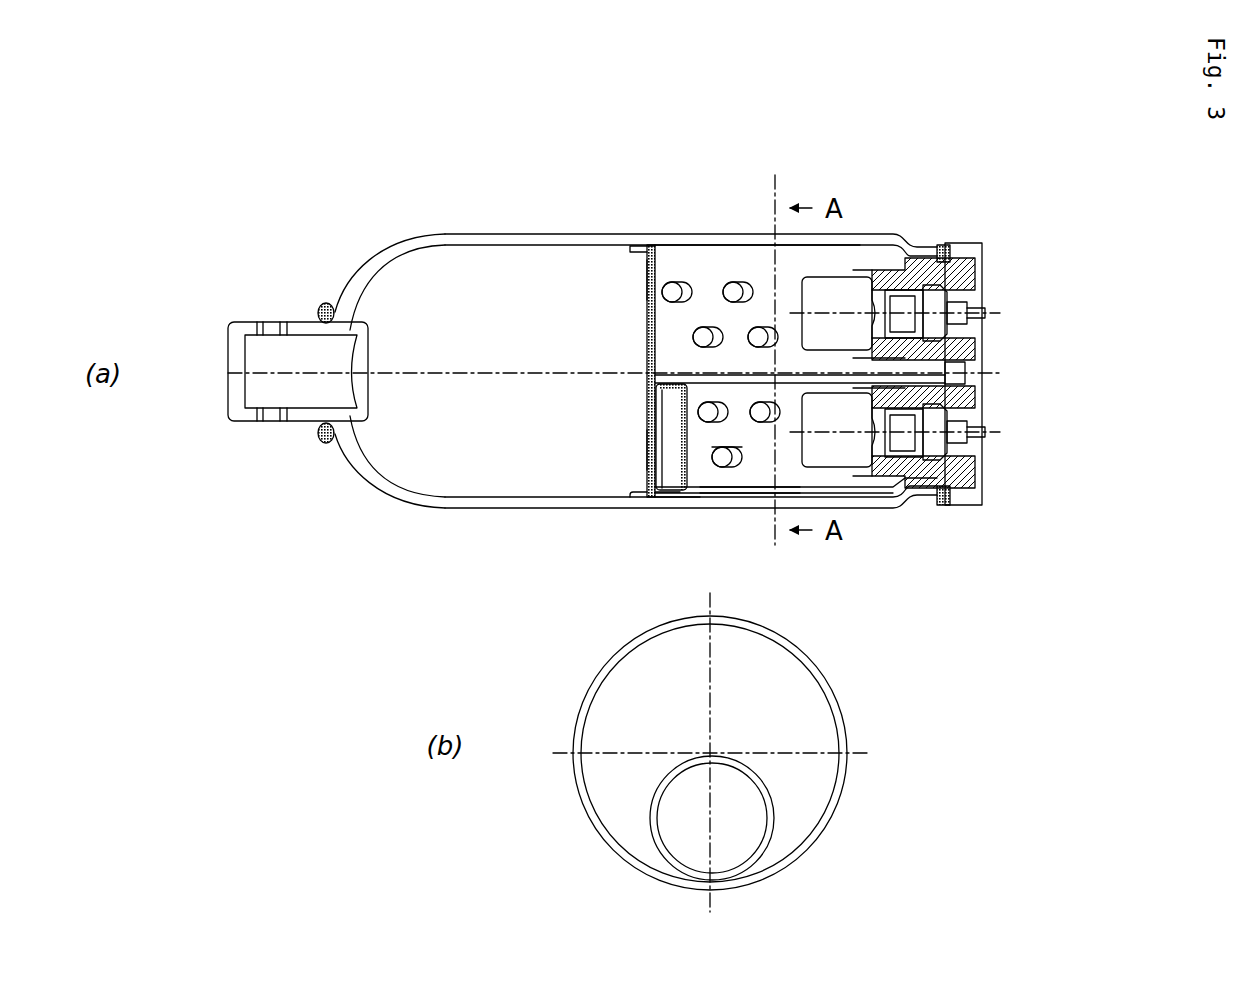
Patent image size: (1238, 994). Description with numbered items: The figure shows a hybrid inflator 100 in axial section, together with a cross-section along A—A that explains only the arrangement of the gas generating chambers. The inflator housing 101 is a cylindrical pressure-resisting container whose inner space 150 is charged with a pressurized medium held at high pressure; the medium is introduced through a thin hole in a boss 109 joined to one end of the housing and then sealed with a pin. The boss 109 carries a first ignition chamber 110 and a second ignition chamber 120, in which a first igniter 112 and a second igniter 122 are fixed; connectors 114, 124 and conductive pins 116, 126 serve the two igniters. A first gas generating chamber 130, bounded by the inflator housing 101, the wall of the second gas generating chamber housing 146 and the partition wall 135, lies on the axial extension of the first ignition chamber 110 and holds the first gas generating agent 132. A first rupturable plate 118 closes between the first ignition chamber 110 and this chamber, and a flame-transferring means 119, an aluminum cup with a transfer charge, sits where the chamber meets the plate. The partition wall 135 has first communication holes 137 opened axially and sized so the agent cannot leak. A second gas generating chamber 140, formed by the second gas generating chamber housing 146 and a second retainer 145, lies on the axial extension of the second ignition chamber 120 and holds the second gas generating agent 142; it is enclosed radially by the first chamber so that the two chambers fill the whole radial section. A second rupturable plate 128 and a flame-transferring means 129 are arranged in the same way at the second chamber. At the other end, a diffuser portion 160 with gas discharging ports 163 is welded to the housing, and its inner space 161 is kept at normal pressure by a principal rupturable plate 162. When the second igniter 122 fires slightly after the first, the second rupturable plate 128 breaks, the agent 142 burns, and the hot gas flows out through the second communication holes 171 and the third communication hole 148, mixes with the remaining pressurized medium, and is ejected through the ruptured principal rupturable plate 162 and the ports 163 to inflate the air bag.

The hybrid inflator 100 is at (546, 205).
The inflator housing 101 is at (441, 234).
The boss 109 is at (924, 258).
The first ignition chamber 110 is at (1000, 305).
The first igniter 112 is at (947, 268).
The connector 114 is at (985, 290).
The conductive pin 116 is at (985, 318).
The first rupturable plate 118 is at (903, 300).
The flame-transferring means 119 is at (835, 295).
The second ignition chamber 120 is at (1000, 422).
The second igniter 122 is at (942, 503).
The connector 124 is at (985, 412).
The conductive pin 126 is at (985, 440).
The second rupturable plate 128 is at (900, 462).
The flame-transferring means 129 is at (820, 462).
The first gas generating chamber 130 is at (721, 275).
The first gas generating agent 132 is at (679, 282).
The partition wall 135 is at (650, 244).
The first communication hole 137 is at (646, 283).
The second gas generating chamber 140 is at (753, 489).
The second gas generating agent 142 is at (732, 470).
The second retainer 145 is at (662, 497).
The second gas generating chamber housing 146 is at (750, 500).
The third communication hole 148 is at (646, 453).
The inner space 150 is at (406, 337).
The diffuser portion 160 is at (226, 432).
The inner space 161 is at (275, 367).
The principal rupturable plate 162 is at (326, 440).
The gas discharging ports 163 is at (257, 322).
The second communication holes 171 is at (679, 437).